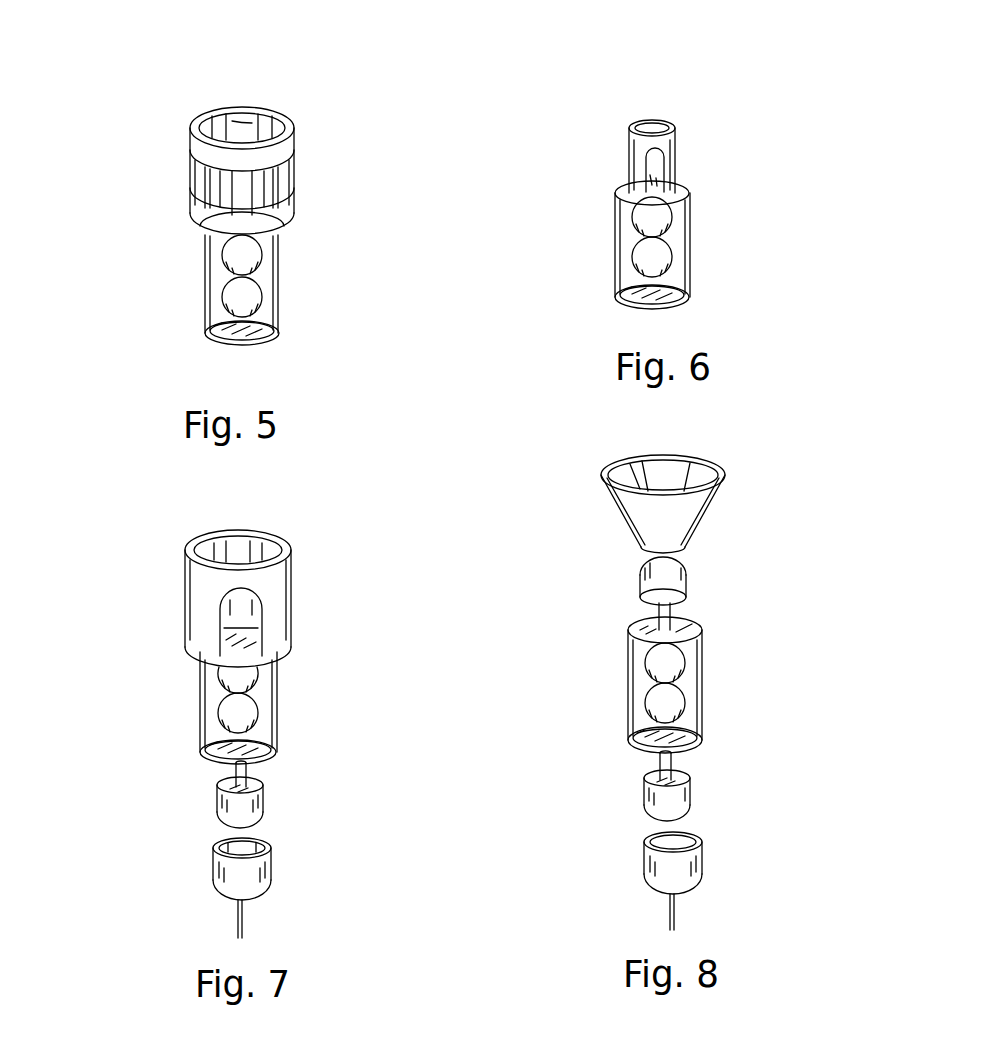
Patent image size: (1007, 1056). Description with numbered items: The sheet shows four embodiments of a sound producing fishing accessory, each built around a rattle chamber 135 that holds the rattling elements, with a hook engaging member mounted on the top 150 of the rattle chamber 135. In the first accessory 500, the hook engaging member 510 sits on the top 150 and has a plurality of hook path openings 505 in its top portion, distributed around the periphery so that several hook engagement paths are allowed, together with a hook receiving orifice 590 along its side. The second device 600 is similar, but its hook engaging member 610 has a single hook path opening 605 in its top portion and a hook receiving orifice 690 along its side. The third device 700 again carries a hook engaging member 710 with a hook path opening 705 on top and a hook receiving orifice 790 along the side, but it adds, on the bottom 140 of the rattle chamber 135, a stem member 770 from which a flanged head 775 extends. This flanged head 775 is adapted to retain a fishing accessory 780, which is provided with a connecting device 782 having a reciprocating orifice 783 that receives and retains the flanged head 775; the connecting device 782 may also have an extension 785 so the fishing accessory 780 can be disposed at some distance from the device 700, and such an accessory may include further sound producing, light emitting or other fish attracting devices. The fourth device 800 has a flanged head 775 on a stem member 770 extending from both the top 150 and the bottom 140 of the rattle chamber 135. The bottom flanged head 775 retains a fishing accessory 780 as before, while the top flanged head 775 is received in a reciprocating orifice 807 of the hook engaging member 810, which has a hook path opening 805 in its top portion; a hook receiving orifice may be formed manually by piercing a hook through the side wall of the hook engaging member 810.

In FIG. 5, the sound producing fishing accessory 500 is at (128, 30).
In FIG. 5, the hook path openings 505 is at (314, 84).
In FIG. 5, the hook engaging member 510 is at (177, 163).
In FIG. 5, the hook receiving orifice 590 is at (230, 133).
In FIG. 5, the top of the rattle chamber 150 is at (299, 186).
In FIG. 6, the top of the rattle chamber 150 is at (715, 174).
In FIG. 7, the top of the rattle chamber 150 is at (323, 614).
In FIG. 8, the top of the rattle chamber 150 is at (727, 605).
In FIG. 5, the rattle chamber 135 is at (321, 290).
In FIG. 6, the rattle chamber 135 is at (725, 251).
In FIG. 7, the rattle chamber 135 is at (308, 708).
In FIG. 8, the rattle chamber 135 is at (739, 691).
In FIG. 6, the sound producing fishing device 600 is at (564, 31).
In FIG. 6, the hook path opening 605 is at (737, 85).
In FIG. 6, the hook engaging member 610 is at (722, 133).
In FIG. 6, the hook receiving orifice 690 is at (591, 152).
In FIG. 7, the sound producing fishing device 700 is at (117, 496).
In FIG. 7, the hook path opening 705 is at (333, 505).
In FIG. 7, the hook engaging member 710 is at (174, 598).
In FIG. 7, the hook receiving orifice 790 is at (317, 590).
In FIG. 7, the bottom of the rattle chamber 140 is at (134, 733).
In FIG. 8, the bottom of the rattle chamber 140 is at (561, 719).
In FIG. 7, the stem member 770 is at (309, 753).
In FIG. 8, the stem member 770 is at (673, 670).
In FIG. 7, the flanged head 775 is at (300, 789).
In FIG. 8, the flanged head 775 is at (674, 678).
In FIG. 7, the fishing accessory 780 is at (105, 887).
In FIG. 8, the fishing accessory 780 is at (606, 881).
In FIG. 7, the connecting device 782 is at (193, 869).
In FIG. 7, the reciprocating orifice 783 is at (304, 824).
In FIG. 7, the extension 785 is at (309, 900).
In FIG. 8, the sound producing fishing device 800 is at (514, 455).
In FIG. 8, the hook path opening 805 is at (757, 443).
In FIG. 8, the reciprocating orifice 807 is at (580, 526).
In FIG. 8, the hook engaging member 810 is at (723, 499).